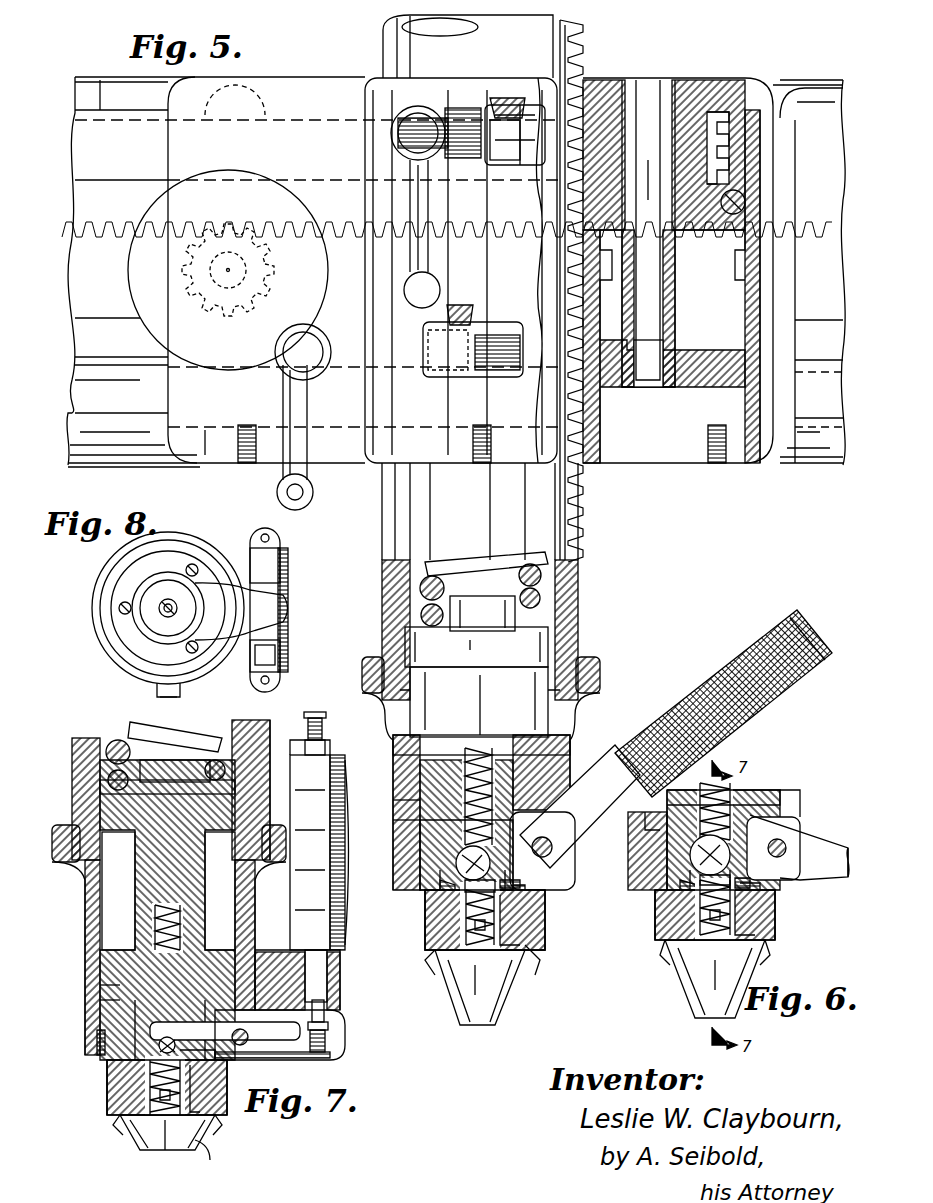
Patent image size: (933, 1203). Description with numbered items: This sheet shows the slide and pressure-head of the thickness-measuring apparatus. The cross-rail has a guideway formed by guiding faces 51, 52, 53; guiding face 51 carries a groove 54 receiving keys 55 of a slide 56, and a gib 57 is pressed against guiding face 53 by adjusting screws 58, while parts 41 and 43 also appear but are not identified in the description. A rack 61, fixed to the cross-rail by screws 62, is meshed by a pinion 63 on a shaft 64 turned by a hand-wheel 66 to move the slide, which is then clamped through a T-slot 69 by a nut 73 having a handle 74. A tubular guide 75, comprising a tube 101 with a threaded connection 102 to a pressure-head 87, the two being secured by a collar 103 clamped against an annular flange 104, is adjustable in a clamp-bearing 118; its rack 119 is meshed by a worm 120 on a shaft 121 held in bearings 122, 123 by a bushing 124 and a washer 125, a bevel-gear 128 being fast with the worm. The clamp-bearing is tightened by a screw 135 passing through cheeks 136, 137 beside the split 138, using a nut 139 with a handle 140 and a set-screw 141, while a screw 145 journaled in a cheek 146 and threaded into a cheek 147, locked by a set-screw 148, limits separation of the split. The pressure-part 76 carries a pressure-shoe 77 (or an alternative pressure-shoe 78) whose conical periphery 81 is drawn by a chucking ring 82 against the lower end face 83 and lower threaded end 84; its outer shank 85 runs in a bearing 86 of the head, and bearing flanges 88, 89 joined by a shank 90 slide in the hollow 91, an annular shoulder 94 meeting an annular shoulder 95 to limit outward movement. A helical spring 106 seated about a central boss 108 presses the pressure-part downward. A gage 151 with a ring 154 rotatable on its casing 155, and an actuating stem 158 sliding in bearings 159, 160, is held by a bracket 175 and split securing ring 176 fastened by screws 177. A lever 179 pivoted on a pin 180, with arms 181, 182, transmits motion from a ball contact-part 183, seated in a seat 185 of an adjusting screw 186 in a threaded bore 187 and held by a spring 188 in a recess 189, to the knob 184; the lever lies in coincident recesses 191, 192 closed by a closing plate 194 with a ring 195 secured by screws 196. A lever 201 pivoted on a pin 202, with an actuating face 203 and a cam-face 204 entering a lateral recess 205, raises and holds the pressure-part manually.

In FIG. 5, the frame plate 41 is at (810, 78).
In FIG. 5, the bed member 43 is at (105, 105).
In FIG. 5, the guiding face 51 is at (82, 78).
In FIG. 5, the guiding face 52 is at (812, 146).
In FIG. 5, the guiding face 53 is at (108, 425).
In FIG. 5, the groove 54 is at (130, 120).
In FIG. 5, the keys 55 is at (235, 108).
In FIG. 5, the slide 56 is at (166, 155).
In FIG. 5, the gib 57 is at (205, 430).
In FIG. 5, the adjusting screws 58 is at (245, 450).
In FIG. 5, the rack 61 is at (815, 237).
In FIG. 5, the screws 62 is at (745, 202).
In FIG. 5, the pinion 63 is at (190, 272).
In FIG. 5, the shaft 64 is at (238, 272).
In FIG. 5, the hand-wheel 66 is at (132, 283).
In FIG. 5, the T-slot 69 is at (112, 330).
In FIG. 5, the nut 73 is at (315, 365).
In FIG. 5, the handle 74 is at (300, 440).
In FIG. 5, the guide 75 is at (383, 40).
In FIG. 7, the guide 75 is at (70, 736).
In FIG. 5, the pressure-part 76 is at (438, 960).
In FIG. 6, the pressure-part 76 is at (670, 960).
In FIG. 8, the pressure-part 76 is at (160, 612).
In FIG. 7, the pressure-part 76 is at (125, 1125).
In FIG. 5, the pressure-shoe 77 is at (498, 1000).
In FIG. 6, the pressure-shoe 77 is at (770, 990).
In FIG. 7, the pressure-shoe 78 is at (172, 1152).
In FIG. 5, the conical periphery 81 is at (518, 985).
In FIG. 6, the conical periphery 81 is at (680, 1000).
In FIG. 7, the conical periphery 81 is at (210, 1135).
In FIG. 5, the chucking ring 82 is at (530, 950).
In FIG. 6, the chucking ring 82 is at (670, 935).
In FIG. 7, the chucking ring 82 is at (210, 1115).
In FIG. 5, the lower end face 83 is at (462, 975).
In FIG. 6, the lower end face 83 is at (730, 975).
In FIG. 8, the lower end face 83 is at (150, 595).
In FIG. 7, the lower end face 83 is at (160, 1135).
In FIG. 5, the lower threaded end 84 is at (430, 905).
In FIG. 6, the lower threaded end 84 is at (665, 905).
In FIG. 7, the lower threaded end 84 is at (110, 1065).
In FIG. 5, the outer shank 85 is at (456, 863).
In FIG. 6, the outer shank 85 is at (692, 860).
In FIG. 8, the outer shank 85 is at (145, 605).
In FIG. 7, the outer shank 85 is at (158, 1043).
In FIG. 5, the bearing 86 is at (445, 850).
In FIG. 6, the bearing 86 is at (680, 862).
In FIG. 7, the bearing 86 is at (125, 1010).
In FIG. 5, the pressure-head 87 is at (570, 732).
In FIG. 6, the pressure-head 87 is at (805, 795).
In FIG. 8, the pressure-head 87 is at (150, 682).
In FIG. 7, the pressure-head 87 is at (78, 952).
In FIG. 5, the bearing flange 88 is at (540, 645).
In FIG. 7, the bearing flange 88 is at (100, 785).
In FIG. 5, the bearing flange 89 is at (520, 805).
In FIG. 6, the bearing flange 89 is at (790, 790).
In FIG. 7, the bearing flange 89 is at (110, 962).
In FIG. 5, the shank 90 is at (560, 690).
In FIG. 7, the shank 90 is at (150, 895).
In FIG. 5, the hollow 91 is at (530, 680).
In FIG. 6, the hollow 91 is at (645, 835).
In FIG. 7, the hollow 91 is at (120, 922).
In FIG. 5, the annular shoulder 94 is at (420, 805).
In FIG. 6, the annular shoulder 94 is at (700, 790).
In FIG. 7, the annular shoulder 94 is at (100, 985).
In FIG. 5, the annular shoulder 95 is at (425, 835).
In FIG. 6, the annular shoulder 95 is at (650, 845).
In FIG. 7, the annular shoulder 95 is at (100, 1000).
In FIG. 5, the tube 101 is at (575, 565).
In FIG. 7, the tube 101 is at (262, 742).
In FIG. 5, the threaded connection 102 is at (560, 630).
In FIG. 7, the threaded connection 102 is at (255, 790).
In FIG. 5, the collar 103 is at (600, 672).
In FIG. 8, the collar 103 is at (160, 535).
In FIG. 7, the collar 103 is at (56, 830).
In FIG. 5, the annular flange 104 is at (580, 710).
In FIG. 8, the annular flange 104 is at (175, 548).
In FIG. 7, the annular flange 104 is at (90, 870).
In FIG. 5, the helical spring 106 is at (550, 560).
In FIG. 7, the helical spring 106 is at (140, 722).
In FIG. 5, the central boss 108 is at (545, 590).
In FIG. 7, the central boss 108 is at (106, 752).
In FIG. 5, the clamp-bearing 118 is at (372, 104).
In FIG. 5, the rack 119 is at (585, 30).
In FIG. 5, the worm 120 is at (732, 153).
In FIG. 5, the shaft 121 is at (650, 90).
In FIG. 5, the bearing 122 is at (612, 100).
In FIG. 5, the bearing 123 is at (700, 385).
In FIG. 5, the bushing 124 is at (676, 298).
In FIG. 5, the washer 125 is at (690, 105).
In FIG. 5, the bevel-gear 128 is at (700, 232).
In FIG. 5, the screw 135 is at (505, 160).
In FIG. 5, the cheek 136 is at (462, 108).
In FIG. 5, the cheek 137 is at (530, 105).
In FIG. 5, the split 138 is at (478, 150).
In FIG. 5, the nut 139 is at (415, 110).
In FIG. 5, the handle 140 is at (410, 200).
In FIG. 5, the set-screw 141 is at (505, 97).
In FIG. 5, the screw 145 is at (460, 380).
In FIG. 5, the cheek 146 is at (445, 370).
In FIG. 5, the cheek 147 is at (497, 372).
In FIG. 5, the set-screw 148 is at (462, 305).
In FIG. 8, the gage 151 is at (290, 565).
In FIG. 7, the gage 151 is at (340, 925).
In FIG. 8, the ring 154 is at (282, 555).
In FIG. 7, the ring 154 is at (330, 780).
In FIG. 7, the casing 155 is at (310, 810).
In FIG. 7, the actuating stem 158 is at (326, 1008).
In FIG. 7, the bearing 159 is at (320, 770).
In FIG. 7, the bearing 160 is at (330, 985).
In FIG. 8, the bracket 175 is at (262, 690).
In FIG. 7, the bracket 175 is at (305, 965).
In FIG. 8, the split securing ring 176 is at (275, 655).
In FIG. 7, the split securing ring 176 is at (325, 745).
In FIG. 8, the screws 177 is at (270, 538).
In FIG. 5, the lever 179 is at (470, 868).
In FIG. 6, the lever 179 is at (700, 880).
In FIG. 7, the lever 179 is at (255, 1060).
In FIG. 7, the pin 180 is at (245, 1035).
In FIG. 5, the arm 181 is at (440, 900).
In FIG. 6, the arm 181 is at (760, 880).
In FIG. 7, the arm 181 is at (195, 1050).
In FIG. 7, the arm 182 is at (328, 1040).
In FIG. 5, the contact-part 183 is at (497, 905).
In FIG. 6, the contact-part 183 is at (732, 895).
In FIG. 7, the contact-part 183 is at (150, 1075).
In FIG. 7, the knob 184 is at (330, 1026).
In FIG. 7, the seat 185 is at (150, 1095).
In FIG. 5, the adjusting screw 186 is at (500, 925).
In FIG. 6, the adjusting screw 186 is at (735, 915).
In FIG. 8, the adjusting screw 186 is at (165, 614).
In FIG. 7, the adjusting screw 186 is at (158, 1098).
In FIG. 5, the threaded bore 187 is at (520, 952).
In FIG. 6, the threaded bore 187 is at (745, 940).
In FIG. 7, the threaded bore 187 is at (150, 1110).
In FIG. 5, the spring 188 is at (495, 760).
In FIG. 6, the spring 188 is at (735, 790).
In FIG. 7, the spring 188 is at (185, 925).
In FIG. 5, the recess 189 is at (500, 790).
In FIG. 6, the recess 189 is at (745, 800).
In FIG. 7, the recess 189 is at (185, 945).
In FIG. 5, the laterally extending recess 191 is at (450, 885).
In FIG. 6, the laterally extending recess 191 is at (690, 892).
In FIG. 7, the laterally extending recess 191 is at (200, 1145).
In FIG. 7, the laterally extending recess 192 is at (335, 1050).
In FIG. 8, the closing plate 194 is at (262, 610).
In FIG. 7, the closing plate 194 is at (320, 1058).
In FIG. 5, the ring 195 is at (515, 890).
In FIG. 6, the ring 195 is at (752, 890).
In FIG. 8, the ring 195 is at (135, 573).
In FIG. 8, the screws 196 is at (198, 566).
In FIG. 7, the screws 196 is at (96, 1040).
In FIG. 5, the lever 201 is at (785, 620).
In FIG. 6, the lever 201 is at (850, 848).
In FIG. 8, the lever 201 is at (168, 698).
In FIG. 5, the pin 202 is at (560, 835).
In FIG. 6, the pin 202 is at (788, 850).
In FIG. 6, the actuating face 203 is at (785, 830).
In FIG. 6, the cam-face 204 is at (790, 840).
In FIG. 5, the lateral recess 205 is at (515, 875).
In FIG. 6, the lateral recess 205 is at (735, 878).